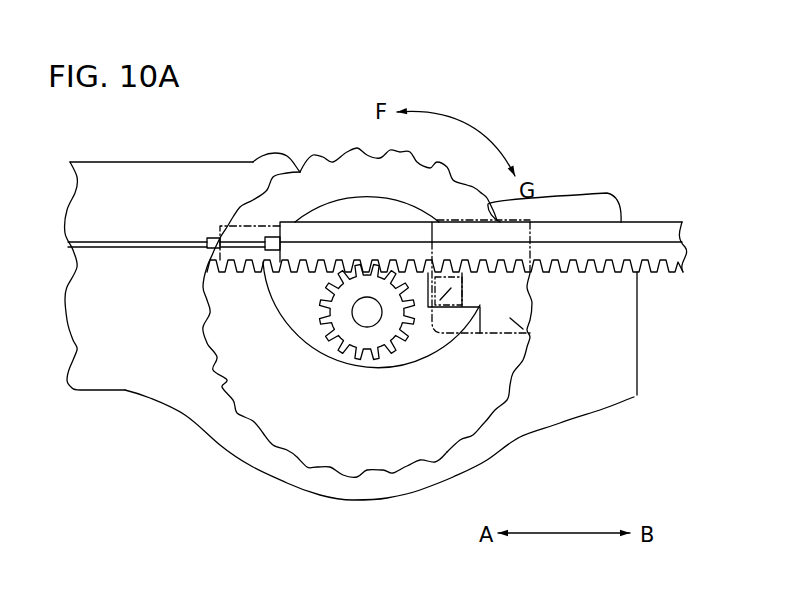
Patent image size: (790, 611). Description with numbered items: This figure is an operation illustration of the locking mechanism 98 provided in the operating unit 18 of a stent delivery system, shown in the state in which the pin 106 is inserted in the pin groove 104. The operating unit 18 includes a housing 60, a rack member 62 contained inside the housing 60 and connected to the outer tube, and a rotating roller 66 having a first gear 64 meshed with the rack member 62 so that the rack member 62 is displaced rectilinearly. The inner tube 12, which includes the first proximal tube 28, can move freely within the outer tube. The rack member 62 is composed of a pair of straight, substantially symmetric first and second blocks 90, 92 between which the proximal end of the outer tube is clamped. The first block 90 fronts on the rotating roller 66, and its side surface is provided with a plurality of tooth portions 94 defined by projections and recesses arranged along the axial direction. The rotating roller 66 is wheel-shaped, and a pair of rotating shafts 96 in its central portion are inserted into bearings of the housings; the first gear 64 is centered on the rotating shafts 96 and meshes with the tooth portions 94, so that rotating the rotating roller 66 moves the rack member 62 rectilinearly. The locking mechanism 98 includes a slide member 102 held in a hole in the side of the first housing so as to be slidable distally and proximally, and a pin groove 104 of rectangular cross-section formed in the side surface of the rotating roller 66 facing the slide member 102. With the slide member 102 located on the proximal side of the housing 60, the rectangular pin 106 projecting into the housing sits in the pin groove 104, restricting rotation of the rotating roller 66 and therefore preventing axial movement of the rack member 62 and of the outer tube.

The inner tube 12 is at (110, 238).
The operating unit 18 is at (162, 415).
The first proximal tube 28 is at (141, 248).
The housing 60 is at (180, 182).
The rack member 62 is at (642, 217).
The first gear 64 is at (338, 320).
The rotating roller 66 is at (350, 153).
The first block 90 is at (657, 252).
The second block 92 is at (590, 232).
The tooth portions 94 is at (297, 271).
The rotating shafts 96 is at (367, 318).
The locking mechanism 98 is at (535, 343).
The slide member 102 is at (535, 334).
The pin groove 104 is at (462, 300).
The pin 106 is at (446, 293).